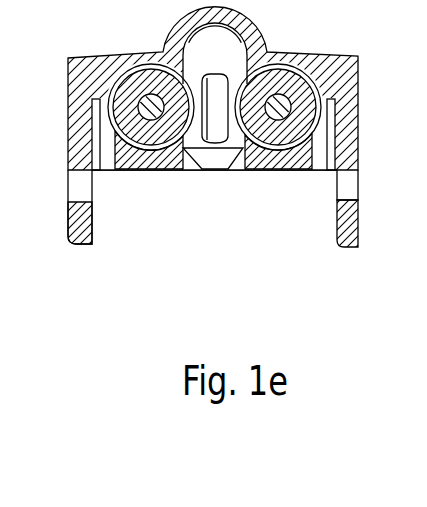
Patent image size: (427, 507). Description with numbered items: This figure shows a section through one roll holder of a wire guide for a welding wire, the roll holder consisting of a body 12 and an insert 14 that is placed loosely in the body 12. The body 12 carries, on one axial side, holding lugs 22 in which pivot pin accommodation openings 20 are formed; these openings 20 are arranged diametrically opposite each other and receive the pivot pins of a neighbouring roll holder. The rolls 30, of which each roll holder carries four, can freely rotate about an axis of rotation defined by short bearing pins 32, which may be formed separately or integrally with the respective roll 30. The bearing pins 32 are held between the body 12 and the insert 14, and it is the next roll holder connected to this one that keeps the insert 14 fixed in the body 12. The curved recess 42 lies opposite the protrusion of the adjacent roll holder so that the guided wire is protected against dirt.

The body 12 is at (360, 56).
The insert 14 is at (138, 171).
The pivot pin accommodation opening 20 is at (348, 183).
The holding lug 22 is at (355, 216).
The roll 30 is at (72, 108).
The bearing pin 32 is at (72, 140).
The recess 42 is at (243, 168).